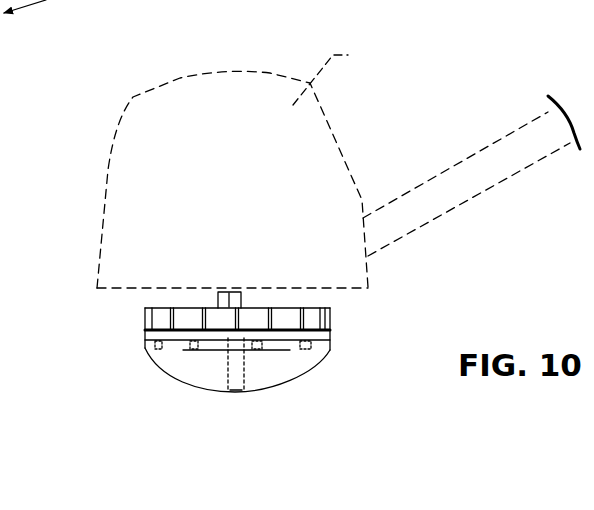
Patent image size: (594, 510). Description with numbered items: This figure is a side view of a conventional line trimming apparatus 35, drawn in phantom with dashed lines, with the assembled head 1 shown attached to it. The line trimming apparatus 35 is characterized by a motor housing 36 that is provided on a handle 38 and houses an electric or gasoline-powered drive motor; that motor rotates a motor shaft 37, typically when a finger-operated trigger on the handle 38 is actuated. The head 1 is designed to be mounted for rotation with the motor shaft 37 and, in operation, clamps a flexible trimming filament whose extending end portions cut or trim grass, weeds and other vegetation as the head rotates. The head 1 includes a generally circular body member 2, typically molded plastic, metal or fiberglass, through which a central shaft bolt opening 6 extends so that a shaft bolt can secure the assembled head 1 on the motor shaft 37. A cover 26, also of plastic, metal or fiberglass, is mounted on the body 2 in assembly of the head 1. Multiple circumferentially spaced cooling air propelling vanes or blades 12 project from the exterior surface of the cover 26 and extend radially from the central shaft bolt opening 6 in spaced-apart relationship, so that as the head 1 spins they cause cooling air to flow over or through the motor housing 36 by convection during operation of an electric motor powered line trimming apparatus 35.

The head 1 is at (305, 380).
The body member 2 is at (166, 372).
The central shaft bolt opening 6 is at (232, 392).
The cooling air propelling vanes 12 is at (200, 308).
The cover 26 is at (334, 332).
The line trimming apparatus 35 is at (178, 76).
The motor housing 36 is at (337, 75).
The motor shaft 37 is at (240, 297).
The handle 38 is at (433, 182).